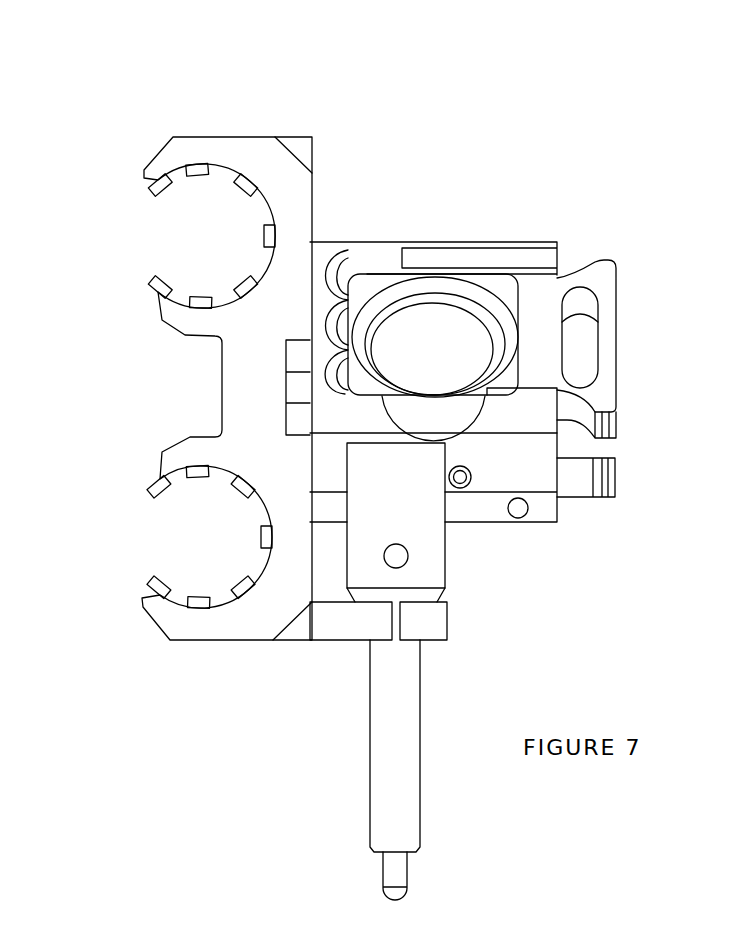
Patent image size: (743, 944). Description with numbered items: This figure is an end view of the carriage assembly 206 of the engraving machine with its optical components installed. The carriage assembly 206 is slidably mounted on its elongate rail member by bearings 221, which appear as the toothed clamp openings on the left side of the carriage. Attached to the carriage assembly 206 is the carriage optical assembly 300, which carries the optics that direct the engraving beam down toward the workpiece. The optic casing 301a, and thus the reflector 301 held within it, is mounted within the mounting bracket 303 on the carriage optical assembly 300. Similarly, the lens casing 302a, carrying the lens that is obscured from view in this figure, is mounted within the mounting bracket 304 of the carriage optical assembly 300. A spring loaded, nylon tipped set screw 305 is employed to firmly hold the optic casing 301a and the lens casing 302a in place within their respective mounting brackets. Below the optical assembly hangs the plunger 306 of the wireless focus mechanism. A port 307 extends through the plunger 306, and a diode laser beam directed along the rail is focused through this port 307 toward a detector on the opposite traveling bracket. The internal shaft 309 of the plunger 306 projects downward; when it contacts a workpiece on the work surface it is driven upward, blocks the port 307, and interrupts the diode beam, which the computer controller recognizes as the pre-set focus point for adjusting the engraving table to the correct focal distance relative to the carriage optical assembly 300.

The carriage assembly 206 is at (298, 207).
The bearings 221 is at (208, 165).
The carriage optical assembly 300 is at (323, 245).
The reflector 301 is at (427, 317).
The optic casing 301a is at (543, 297).
The lens casing 302a is at (572, 483).
The mounting bracket 303 is at (402, 275).
The mounting bracket 304 is at (538, 477).
The set screw 305 is at (462, 482).
The plunger 306 is at (397, 778).
The port 307 is at (390, 560).
The internal shaft 309 is at (400, 873).